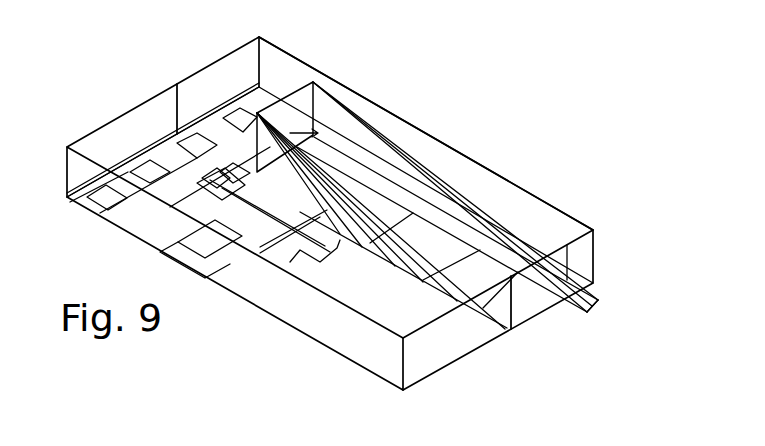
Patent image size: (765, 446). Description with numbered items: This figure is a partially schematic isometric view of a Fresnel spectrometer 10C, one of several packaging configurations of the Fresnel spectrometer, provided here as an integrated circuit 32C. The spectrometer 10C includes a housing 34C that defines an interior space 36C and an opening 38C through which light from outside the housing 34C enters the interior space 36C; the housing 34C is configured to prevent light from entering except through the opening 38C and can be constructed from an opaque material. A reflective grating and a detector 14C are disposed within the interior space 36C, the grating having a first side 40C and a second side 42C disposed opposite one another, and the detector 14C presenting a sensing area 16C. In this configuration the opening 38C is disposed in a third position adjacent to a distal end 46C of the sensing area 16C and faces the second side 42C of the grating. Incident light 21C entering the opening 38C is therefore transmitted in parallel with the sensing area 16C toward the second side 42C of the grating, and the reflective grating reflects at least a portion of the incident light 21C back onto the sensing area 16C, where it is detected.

The Fresnel spectrometer 10C is at (86, 76).
The detector 14C is at (340, 353).
The sensing area 16C is at (445, 248).
The incident light 21C is at (598, 298).
The integrated circuit 32C is at (317, 305).
The housing 34C is at (448, 147).
The interior space 36C is at (148, 170).
The opening 38C is at (535, 298).
The first side 40C is at (253, 90).
The second side 42C is at (290, 118).
The distal end 46C is at (523, 325).